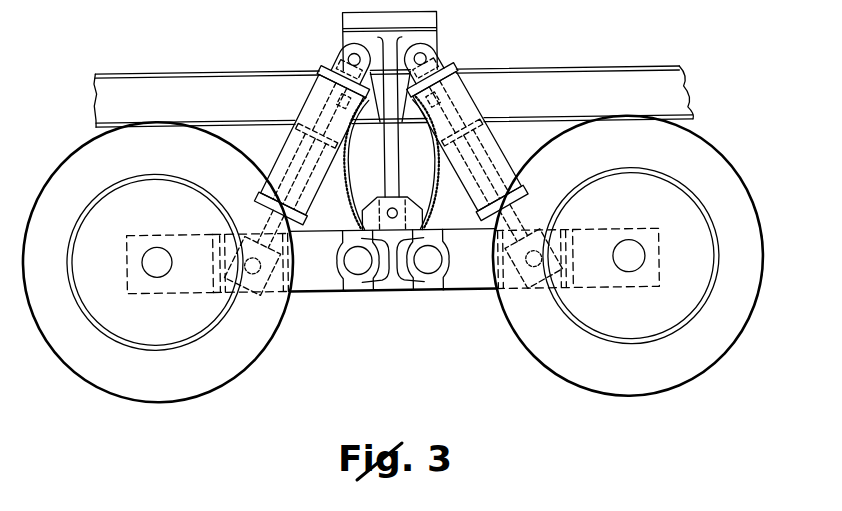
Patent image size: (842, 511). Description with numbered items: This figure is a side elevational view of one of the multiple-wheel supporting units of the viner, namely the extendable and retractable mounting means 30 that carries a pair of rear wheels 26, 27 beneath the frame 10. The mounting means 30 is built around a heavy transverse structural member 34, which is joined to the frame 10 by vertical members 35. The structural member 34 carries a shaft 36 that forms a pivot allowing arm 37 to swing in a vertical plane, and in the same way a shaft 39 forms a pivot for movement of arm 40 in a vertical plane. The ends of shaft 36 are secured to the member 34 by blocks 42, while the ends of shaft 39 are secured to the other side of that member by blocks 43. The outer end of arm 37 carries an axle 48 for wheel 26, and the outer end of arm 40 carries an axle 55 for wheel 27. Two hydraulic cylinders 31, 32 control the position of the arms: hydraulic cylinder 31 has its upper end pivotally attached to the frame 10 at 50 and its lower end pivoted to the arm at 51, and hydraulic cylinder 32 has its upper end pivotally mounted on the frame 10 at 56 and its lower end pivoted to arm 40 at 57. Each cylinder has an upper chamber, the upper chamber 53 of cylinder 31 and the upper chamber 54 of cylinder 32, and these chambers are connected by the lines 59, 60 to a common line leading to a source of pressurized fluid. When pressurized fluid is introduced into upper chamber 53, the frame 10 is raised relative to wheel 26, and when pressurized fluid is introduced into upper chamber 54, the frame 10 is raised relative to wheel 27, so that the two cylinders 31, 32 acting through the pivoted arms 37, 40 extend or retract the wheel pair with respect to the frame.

The frame 10 is at (594, 66).
The wheel 26 is at (270, 328).
The wheel 27 is at (527, 336).
The mounting means 30 is at (415, 294).
The hydraulic cylinder 31 is at (286, 143).
The hydraulic cylinder 32 is at (497, 139).
The transverse structural member 34 is at (392, 287).
The vertical members 35 is at (400, 134).
The shaft 36 is at (352, 260).
The arm 37 is at (302, 283).
The shaft 39 is at (436, 260).
The arm 40 is at (462, 286).
The blocks 42 is at (352, 236).
The blocks 43 is at (436, 234).
The axle 48 is at (168, 262).
The pivotal attachment 50 is at (347, 54).
The pivot 51 is at (243, 290).
The upper chamber 53 is at (319, 112).
The upper chamber 54 is at (472, 108).
The axle 55 is at (646, 256).
The pivotal mounting 56 is at (437, 54).
The pivot 57 is at (524, 281).
The line 59 is at (349, 189).
The line 60 is at (438, 189).